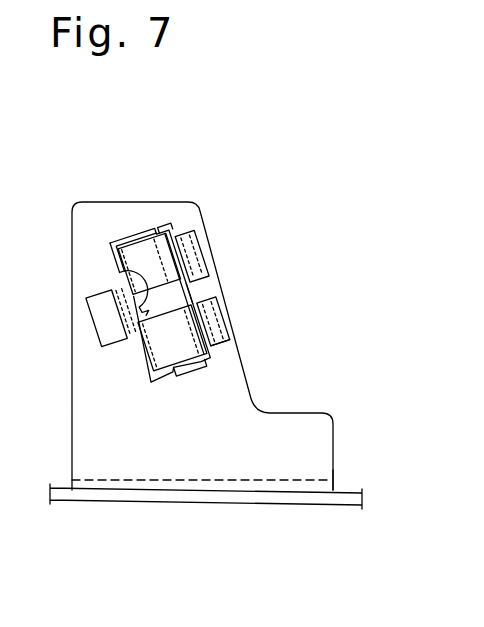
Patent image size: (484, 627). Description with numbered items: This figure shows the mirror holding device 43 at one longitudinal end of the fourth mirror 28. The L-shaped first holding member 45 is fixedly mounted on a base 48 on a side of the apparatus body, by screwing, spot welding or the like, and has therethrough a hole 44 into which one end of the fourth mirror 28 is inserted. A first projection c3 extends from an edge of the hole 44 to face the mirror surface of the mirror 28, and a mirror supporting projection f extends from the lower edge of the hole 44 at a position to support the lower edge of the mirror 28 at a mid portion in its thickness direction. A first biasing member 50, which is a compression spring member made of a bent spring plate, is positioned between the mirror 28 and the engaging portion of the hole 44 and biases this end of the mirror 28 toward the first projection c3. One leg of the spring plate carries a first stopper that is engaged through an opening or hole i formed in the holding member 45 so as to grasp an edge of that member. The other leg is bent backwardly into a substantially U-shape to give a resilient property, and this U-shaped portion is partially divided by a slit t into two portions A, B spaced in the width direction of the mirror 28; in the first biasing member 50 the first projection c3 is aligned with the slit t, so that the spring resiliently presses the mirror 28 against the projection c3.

The holding device 43 is at (96, 168).
The first biasing member 50 is at (156, 258).
The fourth mirror 28 is at (189, 221).
The portion A is at (237, 240).
The slit t is at (232, 283).
The portion B is at (227, 325).
The mirror supporting projection f is at (252, 354).
The hole 44 is at (261, 383).
The base 48 is at (350, 490).
The first holding member 45 is at (217, 491).
The first projection c3 is at (93, 287).
The hole i is at (83, 326).